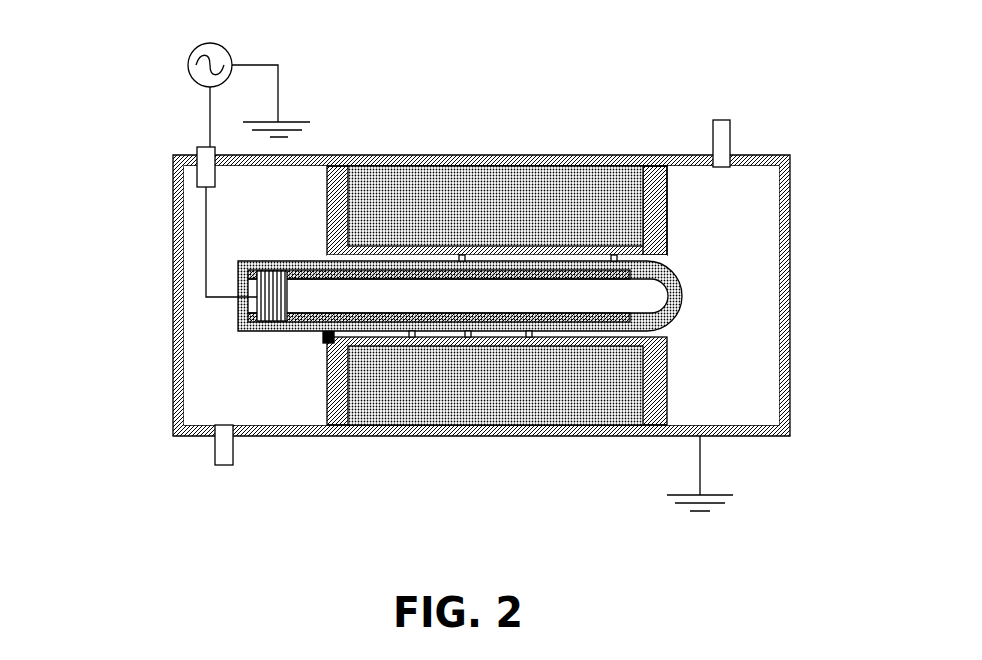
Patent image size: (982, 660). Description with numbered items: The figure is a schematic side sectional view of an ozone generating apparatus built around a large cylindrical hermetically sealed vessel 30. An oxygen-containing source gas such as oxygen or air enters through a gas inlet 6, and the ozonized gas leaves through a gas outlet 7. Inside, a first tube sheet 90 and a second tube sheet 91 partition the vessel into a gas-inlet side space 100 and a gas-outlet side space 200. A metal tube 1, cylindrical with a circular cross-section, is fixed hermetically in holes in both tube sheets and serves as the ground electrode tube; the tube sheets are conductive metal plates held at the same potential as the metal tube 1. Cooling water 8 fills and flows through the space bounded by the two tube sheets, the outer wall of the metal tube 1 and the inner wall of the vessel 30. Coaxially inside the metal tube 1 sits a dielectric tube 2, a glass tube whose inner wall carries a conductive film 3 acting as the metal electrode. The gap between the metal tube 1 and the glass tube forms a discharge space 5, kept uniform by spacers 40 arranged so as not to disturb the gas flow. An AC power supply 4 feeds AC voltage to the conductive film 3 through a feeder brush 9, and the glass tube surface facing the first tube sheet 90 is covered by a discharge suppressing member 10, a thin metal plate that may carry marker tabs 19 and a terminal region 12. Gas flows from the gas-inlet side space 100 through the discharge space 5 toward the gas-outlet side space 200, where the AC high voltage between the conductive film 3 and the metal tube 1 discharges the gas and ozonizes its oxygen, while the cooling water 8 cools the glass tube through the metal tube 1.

The metal tube 1 is at (460, 279).
The dielectric tube 2 is at (580, 329).
The conductive film 3 is at (468, 333).
The AC power supply 4 is at (190, 60).
The discharge space 5 is at (393, 333).
The gas inlet 6 is at (213, 470).
The gas outlet 7 is at (732, 122).
The cooling water 8 is at (447, 197).
The feeder brush 9 is at (240, 329).
The discharge suppressing member 10 is at (330, 260).
The power feed terminal 12 is at (205, 157).
The marker tab 19 is at (323, 334).
The hermetically sealed vessel 30 is at (405, 153).
The spacers 40 is at (462, 252).
The first tube sheet 90 is at (342, 153).
The second tube sheet 91 is at (665, 202).
The gas-inlet side space 100 is at (228, 367).
The gas-outlet side space 200 is at (737, 287).